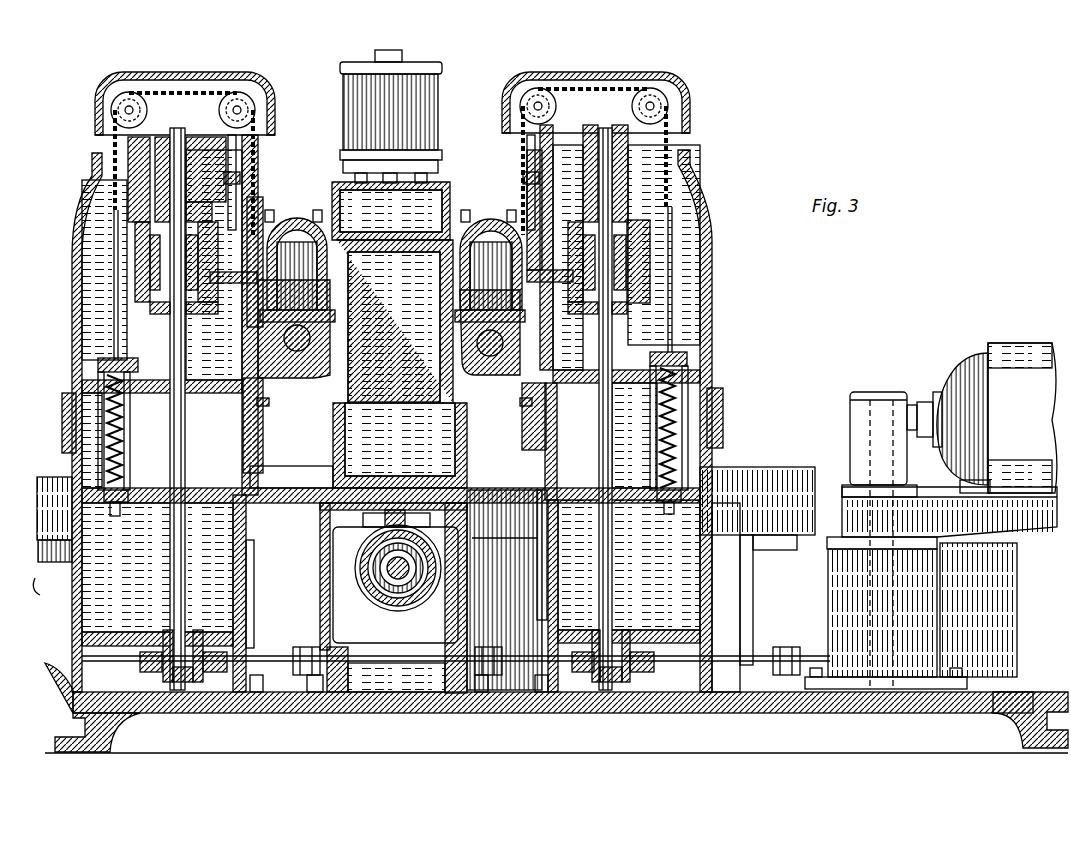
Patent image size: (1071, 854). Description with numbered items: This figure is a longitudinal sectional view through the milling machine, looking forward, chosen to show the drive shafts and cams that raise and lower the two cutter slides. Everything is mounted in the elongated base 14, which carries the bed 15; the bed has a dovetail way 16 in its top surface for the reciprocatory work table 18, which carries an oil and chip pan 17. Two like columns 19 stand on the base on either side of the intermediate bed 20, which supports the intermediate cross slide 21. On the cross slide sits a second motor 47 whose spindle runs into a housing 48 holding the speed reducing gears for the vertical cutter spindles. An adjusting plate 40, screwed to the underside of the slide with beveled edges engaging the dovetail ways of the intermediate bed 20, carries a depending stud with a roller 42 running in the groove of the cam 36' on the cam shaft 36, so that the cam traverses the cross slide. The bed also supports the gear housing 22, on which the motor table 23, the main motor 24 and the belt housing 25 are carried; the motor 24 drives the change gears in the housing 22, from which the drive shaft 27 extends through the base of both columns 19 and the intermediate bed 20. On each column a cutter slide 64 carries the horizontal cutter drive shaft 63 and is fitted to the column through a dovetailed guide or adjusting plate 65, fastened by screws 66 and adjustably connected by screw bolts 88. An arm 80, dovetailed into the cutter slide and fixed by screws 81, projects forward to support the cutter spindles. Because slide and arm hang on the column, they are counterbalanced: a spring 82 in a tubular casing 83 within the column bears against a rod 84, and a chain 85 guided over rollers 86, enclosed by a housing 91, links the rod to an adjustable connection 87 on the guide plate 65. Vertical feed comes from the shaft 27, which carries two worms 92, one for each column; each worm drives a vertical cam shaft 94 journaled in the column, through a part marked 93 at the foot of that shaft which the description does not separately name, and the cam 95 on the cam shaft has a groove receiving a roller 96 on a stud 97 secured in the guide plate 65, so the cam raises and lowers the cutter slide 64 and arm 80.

The base 14 is at (505, 700).
The bed 15 is at (745, 578).
The dovetail way 16 is at (520, 612).
The oil and chip pan 17 is at (52, 478).
The work table 18 is at (41, 590).
The column 19 is at (74, 250).
The intermediate bed 20 is at (332, 560).
The intermediate cross slide 21 is at (400, 364).
The gear housing 22 is at (911, 613).
The motor table 23 is at (949, 512).
The motor 24 is at (997, 418).
The belt housing 25 is at (853, 440).
The drive shaft 27 is at (780, 635).
The cam shaft 36 is at (406, 598).
The cam 36' is at (386, 654).
The adjusting plate 40 is at (340, 488).
The roller 42 is at (418, 540).
The second motor 47 is at (391, 116).
The housing 48 is at (391, 211).
The drive shaft 63 is at (275, 378).
The cutter slide 64 is at (310, 352).
The adjusting plate 65 is at (240, 190).
The screws 66 is at (268, 410).
The arm 80 is at (392, 270).
The screws 81 is at (285, 212).
The spring 82 is at (110, 425).
The tubular casing 83 is at (100, 400).
The rod 84 is at (114, 265).
The chain 85 is at (115, 138).
The rollers 86 is at (129, 108).
The adjustable connection 87 is at (246, 178).
The screw bolts 88 is at (250, 160).
The housing 91 is at (180, 72).
The worm 92 is at (165, 675).
The worm gear 93 is at (140, 660).
The cam shaft 94 is at (185, 476).
The cam 95 is at (200, 235).
The roller 96 is at (205, 312).
The stud 97 is at (230, 332).